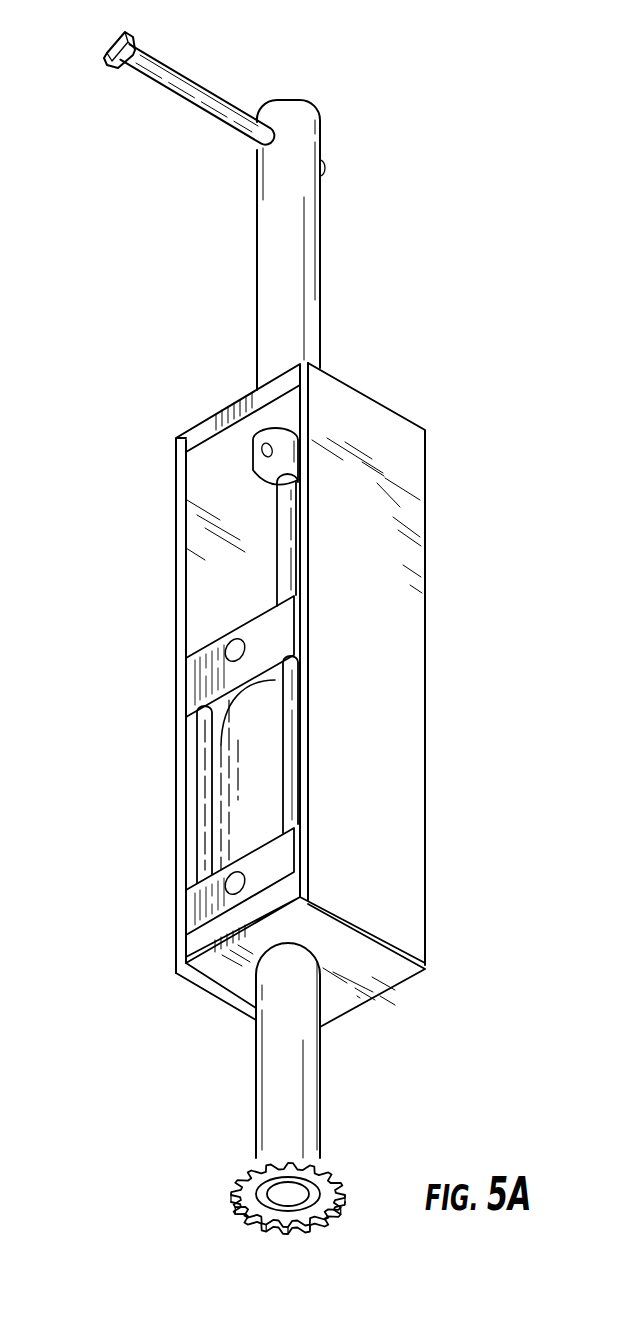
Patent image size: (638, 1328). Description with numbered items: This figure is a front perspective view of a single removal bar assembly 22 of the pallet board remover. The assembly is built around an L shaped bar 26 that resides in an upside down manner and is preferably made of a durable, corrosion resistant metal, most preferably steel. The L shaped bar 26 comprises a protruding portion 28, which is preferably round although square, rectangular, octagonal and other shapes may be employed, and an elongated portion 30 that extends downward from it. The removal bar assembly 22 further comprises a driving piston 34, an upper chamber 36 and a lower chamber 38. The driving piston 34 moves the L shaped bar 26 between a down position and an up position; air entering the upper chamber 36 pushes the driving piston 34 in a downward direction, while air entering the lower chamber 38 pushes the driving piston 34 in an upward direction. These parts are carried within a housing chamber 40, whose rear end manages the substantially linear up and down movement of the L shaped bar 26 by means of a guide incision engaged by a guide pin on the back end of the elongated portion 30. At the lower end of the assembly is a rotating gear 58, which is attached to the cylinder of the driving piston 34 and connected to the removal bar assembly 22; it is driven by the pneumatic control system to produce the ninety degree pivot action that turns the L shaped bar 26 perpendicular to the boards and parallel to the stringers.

The removal bar assembly 22 is at (437, 123).
The L shaped bar 26 is at (140, 197).
The protruding portion 28 is at (177, 68).
The elongated portion 30 is at (322, 280).
The driving piston 34 is at (253, 765).
The upper chamber 36 is at (253, 725).
The lower chamber 38 is at (255, 812).
The housing chamber 40 is at (427, 863).
The rotating gear 58 is at (345, 1177).